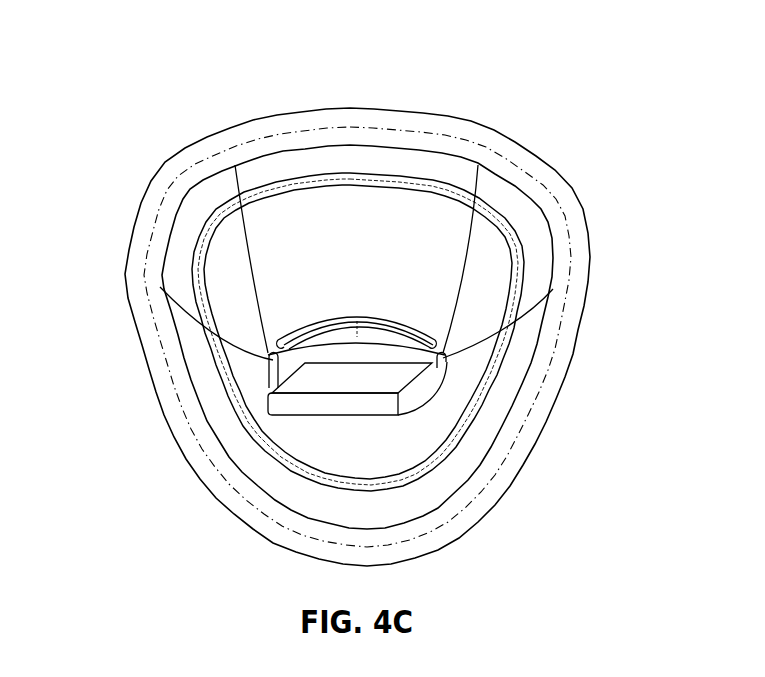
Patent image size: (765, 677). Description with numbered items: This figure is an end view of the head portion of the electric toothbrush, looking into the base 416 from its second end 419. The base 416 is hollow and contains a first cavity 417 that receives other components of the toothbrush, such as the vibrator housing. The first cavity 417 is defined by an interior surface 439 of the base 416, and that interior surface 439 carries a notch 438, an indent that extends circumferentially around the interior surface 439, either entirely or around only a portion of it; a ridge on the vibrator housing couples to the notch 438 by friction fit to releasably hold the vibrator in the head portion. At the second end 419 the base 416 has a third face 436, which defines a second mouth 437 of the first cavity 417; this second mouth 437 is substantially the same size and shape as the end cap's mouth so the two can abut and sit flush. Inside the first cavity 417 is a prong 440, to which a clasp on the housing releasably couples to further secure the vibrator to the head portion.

The base 416 is at (158, 173).
The first cavity 417 is at (352, 275).
The second end 419 is at (463, 522).
The third face 436 is at (400, 344).
The second mouth 437 is at (563, 318).
The notch 438 is at (522, 258).
The interior surface 439 is at (257, 467).
The prong 440 is at (285, 381).